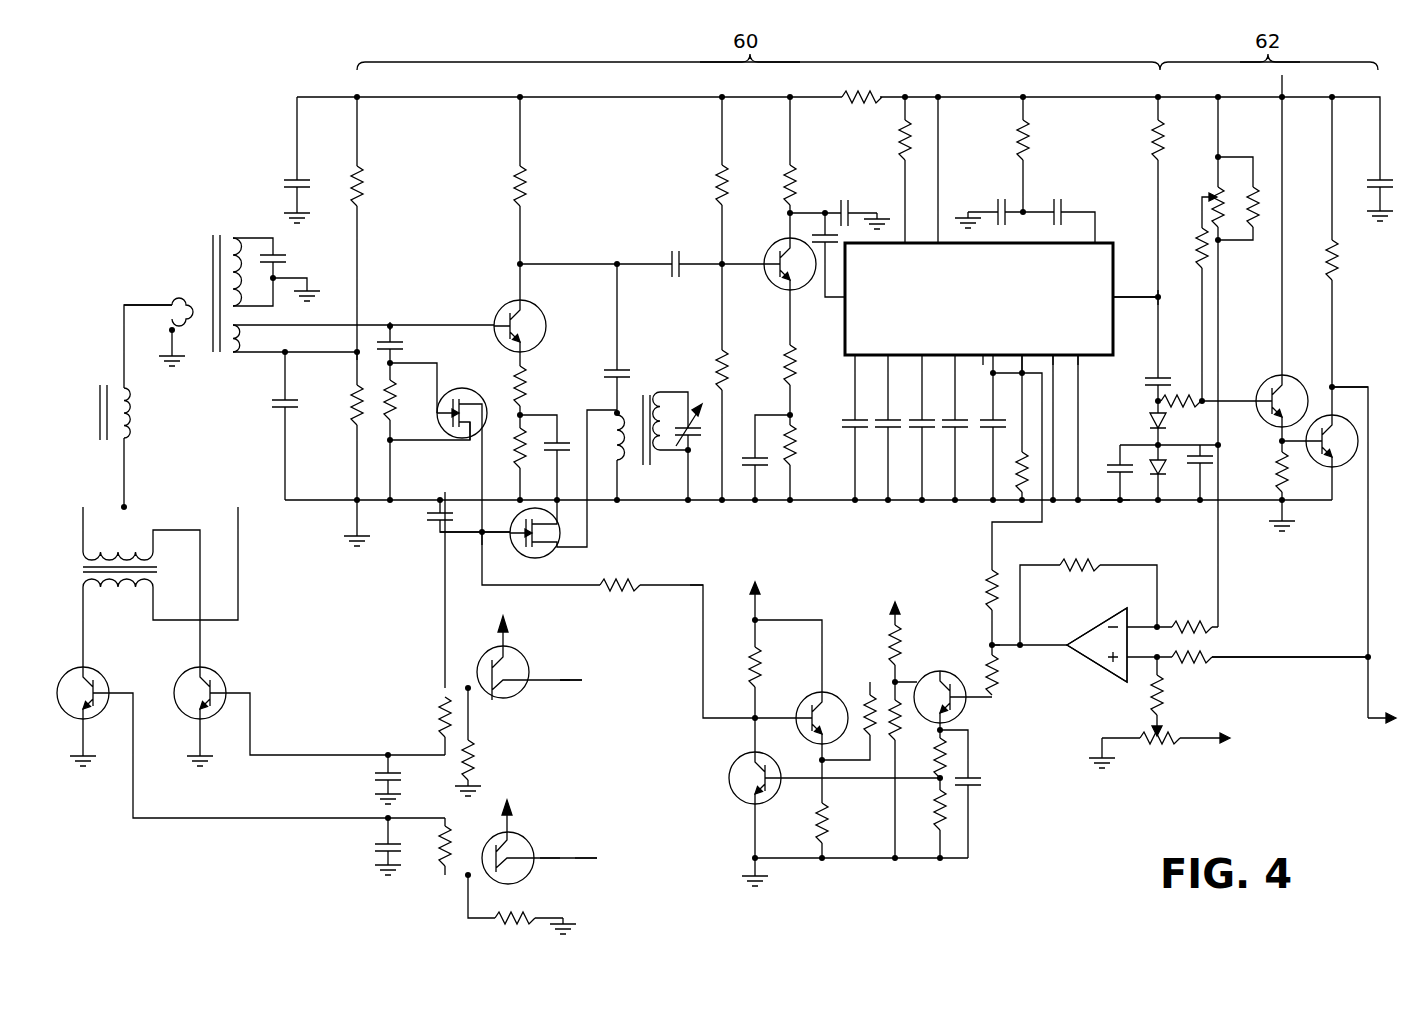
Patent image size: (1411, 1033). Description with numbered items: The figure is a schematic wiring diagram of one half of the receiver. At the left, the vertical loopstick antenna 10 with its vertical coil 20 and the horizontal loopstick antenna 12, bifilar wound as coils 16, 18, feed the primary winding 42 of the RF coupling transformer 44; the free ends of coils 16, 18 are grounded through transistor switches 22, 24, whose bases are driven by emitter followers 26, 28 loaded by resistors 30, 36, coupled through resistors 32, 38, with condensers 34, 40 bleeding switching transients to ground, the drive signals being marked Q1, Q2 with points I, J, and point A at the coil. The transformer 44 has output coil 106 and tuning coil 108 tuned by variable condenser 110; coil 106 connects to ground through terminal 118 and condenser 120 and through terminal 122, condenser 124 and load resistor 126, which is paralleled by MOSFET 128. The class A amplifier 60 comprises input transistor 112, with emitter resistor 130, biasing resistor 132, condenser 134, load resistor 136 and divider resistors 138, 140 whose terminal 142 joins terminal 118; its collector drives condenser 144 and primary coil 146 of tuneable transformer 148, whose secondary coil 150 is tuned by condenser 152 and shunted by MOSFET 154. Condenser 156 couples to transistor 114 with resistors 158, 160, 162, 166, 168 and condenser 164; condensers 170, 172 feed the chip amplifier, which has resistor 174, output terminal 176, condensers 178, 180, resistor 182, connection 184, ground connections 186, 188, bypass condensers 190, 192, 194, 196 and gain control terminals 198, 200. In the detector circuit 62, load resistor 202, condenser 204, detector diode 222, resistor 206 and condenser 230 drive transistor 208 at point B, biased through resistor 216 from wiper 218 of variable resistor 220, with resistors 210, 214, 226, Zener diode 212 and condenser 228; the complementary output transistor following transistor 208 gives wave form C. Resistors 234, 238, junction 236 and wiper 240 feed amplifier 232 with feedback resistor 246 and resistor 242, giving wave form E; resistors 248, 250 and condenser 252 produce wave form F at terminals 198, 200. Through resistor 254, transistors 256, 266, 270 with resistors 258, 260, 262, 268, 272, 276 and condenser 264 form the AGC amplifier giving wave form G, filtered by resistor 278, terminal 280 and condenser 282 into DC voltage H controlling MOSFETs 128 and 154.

The vertical loopstick antenna 10 is at (104, 375).
The horizontal loopstick antenna 12 is at (80, 566).
The coil 16 is at (110, 546).
The coil 18 is at (136, 596).
The vertical coil 20 is at (132, 420).
The transistor switch 22 is at (215, 675).
The transistor switch 24 is at (100, 675).
The transistor 26 is at (507, 655).
The transistor amplifier 28 is at (516, 842).
The resistor 30 is at (478, 755).
The resistor 32 is at (440, 720).
The condenser 34 is at (380, 773).
The resistor 36 is at (528, 912).
The resistor 38 is at (440, 846).
The condenser 40 is at (380, 838).
The primary winding 42 is at (192, 300).
The RF coupling transformer 44 is at (188, 216).
The class A amplifier 60 is at (750, 45).
The detector circuit 62 is at (1270, 45).
The output coil 106 is at (236, 355).
The tuning coil 108 is at (238, 236).
The variable condenser 110 is at (280, 257).
The input transistor 112 is at (502, 306).
The transistor 114 is at (777, 250).
The terminal 118 is at (285, 350).
The condenser 120 is at (283, 410).
The terminal 122 is at (388, 324).
The condenser 124 is at (402, 345).
The load resistor 126 is at (398, 408).
The Metal Oxide Silicon Field Effect Transistor 128 is at (463, 390).
The unbypassed emitter resistor 130 is at (528, 385).
The biasing resistor 132 is at (515, 452).
The condenser 134 is at (562, 432).
The load resistor 136 is at (515, 178).
The resistor 138 is at (352, 172).
The resistor 140 is at (352, 412).
The connecting terminal 142 is at (355, 357).
The condenser 144 is at (622, 372).
The primary coil 146 is at (622, 463).
The tuneable transformer 148 is at (647, 395).
The secondary coil 150 is at (665, 392).
The tuneable condenser 152 is at (698, 445).
The MOSFET transistor 154 is at (548, 555).
The RF passing condenser 156 is at (668, 252).
The resistor 158 is at (785, 176).
The unbypassed emitter resistor 160 is at (786, 383).
The DC biasing resistor 162 is at (800, 468).
The RF passing condenser 164 is at (752, 478).
The resistor 166 is at (716, 176).
The resistor 168 is at (727, 365).
The RF passing condenser 170 is at (823, 228).
The condenser 172 is at (846, 203).
The resistor 174 is at (1016, 138).
The terminal 176 is at (1109, 296).
The RF passing condenser 178 is at (1062, 204).
The noise eliminating condenser 180 is at (992, 204).
The resistor 182 is at (898, 148).
The connection 184 is at (942, 250).
The connection 186 is at (1053, 354).
The connection 188 is at (1079, 352).
The bypass condenser 190 is at (852, 420).
The bypass condenser 192 is at (883, 428).
The bypass condenser 194 is at (918, 433).
The bypass condenser 196 is at (950, 437).
The gain control terminal 198 is at (982, 353).
The gain control terminal 200 is at (1020, 353).
The load resistor 202 is at (1152, 132).
The RF passing condenser 204 is at (1165, 375).
The resistor 206 is at (1185, 398).
The transistor 208 is at (1276, 426).
The resistor 210 is at (1280, 497).
The Zener diode 212 is at (1122, 485).
The resistor 214 is at (1256, 238).
The resistor 216 is at (1180, 290).
The wiper 218 is at (1206, 200).
The variable resistor 220 is at (1225, 195).
The detector diode 222 is at (1150, 432).
The load resistor 226 is at (1340, 258).
The condenser 228 is at (1116, 503).
The condenser 230 is at (1198, 478).
The amplifier 232 is at (1100, 626).
The fixed resistor 234 is at (1215, 657).
The junction 236 is at (1165, 662).
The resistor 238 is at (1150, 716).
The wiper 240 is at (1170, 746).
The resistor 242 is at (1204, 620).
The resistor 246 is at (1085, 560).
The resistor 248 is at (986, 588).
The resistor 250 is at (1018, 496).
The condenser 252 is at (988, 437).
The load stabilizing resistor 254 is at (1000, 672).
The transistor 256 is at (928, 672).
The resistor 258 is at (890, 626).
The load resistor 260 is at (968, 745).
The load resistor 262 is at (946, 820).
The condenser 264 is at (972, 790).
The second transistor amplifier 266 is at (728, 780).
The load resistor 268 is at (750, 662).
The feedback transistor 270 is at (812, 696).
The load resistor 272 is at (815, 828).
The resistor 276 is at (894, 762).
The resistor 278 is at (613, 590).
The terminal 280 is at (482, 545).
The filtering condenser 282 is at (437, 530).
The node A is at (170, 304).
The node B is at (1155, 300).
The wave form C is at (1335, 385).
The wave form E is at (990, 643).
The wave form F is at (1020, 370).
The wave form G is at (688, 580).
The wave form H is at (480, 536).
The node I is at (578, 686).
The node J is at (556, 856).
The output Q1 is at (585, 680).
The output Q2 is at (600, 861).